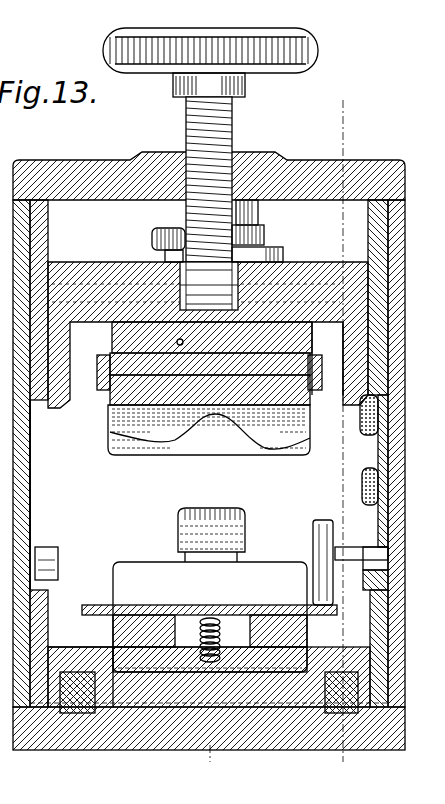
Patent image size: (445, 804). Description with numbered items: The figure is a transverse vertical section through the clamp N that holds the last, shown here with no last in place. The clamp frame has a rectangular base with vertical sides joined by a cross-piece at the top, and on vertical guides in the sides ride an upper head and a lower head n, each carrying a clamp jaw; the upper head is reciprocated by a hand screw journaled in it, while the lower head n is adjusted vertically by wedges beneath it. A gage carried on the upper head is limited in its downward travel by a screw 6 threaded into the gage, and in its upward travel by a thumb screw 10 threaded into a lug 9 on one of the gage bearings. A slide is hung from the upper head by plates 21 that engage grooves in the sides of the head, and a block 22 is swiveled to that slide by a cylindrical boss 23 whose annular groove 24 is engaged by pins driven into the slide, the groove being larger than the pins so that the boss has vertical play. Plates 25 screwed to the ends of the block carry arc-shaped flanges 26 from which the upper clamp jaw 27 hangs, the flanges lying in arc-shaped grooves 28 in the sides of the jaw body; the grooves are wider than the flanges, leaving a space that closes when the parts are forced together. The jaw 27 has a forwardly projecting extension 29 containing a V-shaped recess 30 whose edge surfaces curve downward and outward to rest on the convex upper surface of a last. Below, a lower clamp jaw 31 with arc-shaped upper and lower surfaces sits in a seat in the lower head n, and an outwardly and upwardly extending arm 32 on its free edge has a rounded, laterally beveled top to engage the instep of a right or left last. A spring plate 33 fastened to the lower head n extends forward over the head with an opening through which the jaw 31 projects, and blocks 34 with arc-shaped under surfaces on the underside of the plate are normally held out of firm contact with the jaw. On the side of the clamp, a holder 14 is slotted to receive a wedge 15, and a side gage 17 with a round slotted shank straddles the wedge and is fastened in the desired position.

The lower head n is at (392, 636).
The clamp N is at (38, 477).
The screw 6 is at (150, 238).
The lug 9 is at (284, 256).
The thumb screw 10 is at (266, 230).
The holder 14 is at (60, 558).
The wedge 15 is at (376, 528).
The side gage 17 is at (312, 538).
The plates 21 is at (178, 341).
The block 22 is at (338, 280).
The cylindrical boss 23 is at (322, 360).
The annular groove 24 is at (224, 346).
The plates 25 is at (102, 390).
The arc-shaped flanges 26 is at (110, 405).
The upper clamp jaw 27 is at (306, 420).
The arc-shaped grooves 28 is at (199, 632).
The forwardly projecting extension 29 is at (278, 631).
The V-shaped recess 30 is at (248, 426).
The lower clamp jaw 31 is at (210, 617).
The arm 32 is at (235, 497).
The spring plate 33 is at (172, 597).
The blocks 34 is at (100, 658).